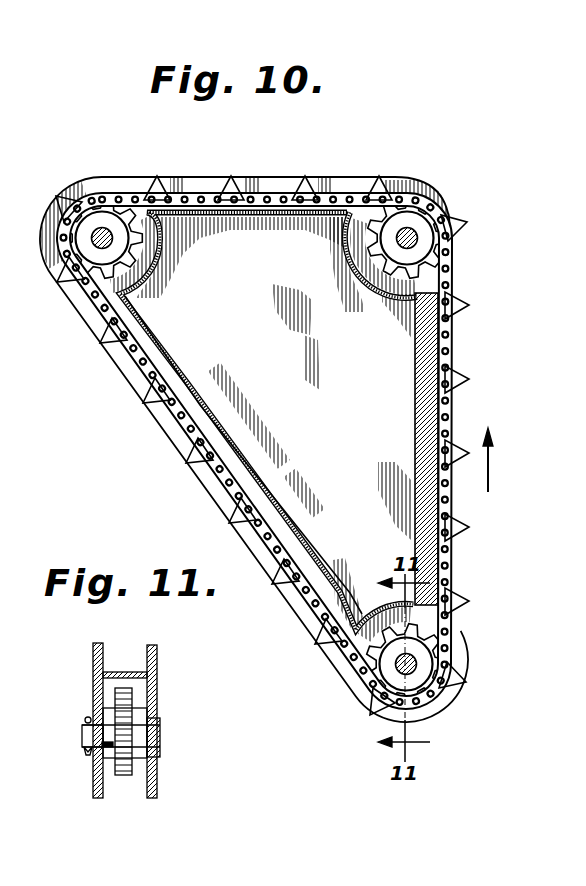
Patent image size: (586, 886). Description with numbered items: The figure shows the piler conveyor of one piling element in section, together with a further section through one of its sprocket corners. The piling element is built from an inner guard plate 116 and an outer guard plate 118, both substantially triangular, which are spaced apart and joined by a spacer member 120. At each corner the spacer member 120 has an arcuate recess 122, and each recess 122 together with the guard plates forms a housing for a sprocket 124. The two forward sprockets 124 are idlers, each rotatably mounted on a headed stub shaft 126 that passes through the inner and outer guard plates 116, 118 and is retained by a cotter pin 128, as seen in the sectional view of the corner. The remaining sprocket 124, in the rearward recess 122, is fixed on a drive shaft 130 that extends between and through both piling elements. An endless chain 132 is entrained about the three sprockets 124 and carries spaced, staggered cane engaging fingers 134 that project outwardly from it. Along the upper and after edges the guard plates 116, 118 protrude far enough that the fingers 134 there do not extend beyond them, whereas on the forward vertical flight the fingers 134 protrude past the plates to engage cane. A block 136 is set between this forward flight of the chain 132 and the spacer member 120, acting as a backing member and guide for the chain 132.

In FIG. 10, the inner guard plate 116 is at (43, 300).
In FIG. 11, the inner guard plate 116 is at (94, 663).
In FIG. 10, the outer guard plate 118 is at (272, 383).
In FIG. 11, the outer guard plate 118 is at (158, 668).
In FIG. 10, the spacer member 120 is at (253, 486).
In FIG. 10, the arcuate recess 122 is at (140, 203).
In FIG. 11, the arcuate recess 122 is at (133, 697).
In FIG. 10, the sprocket 124 is at (451, 280).
In FIG. 11, the sprocket 124 is at (127, 730).
In FIG. 10, the headed stub shaft 126 is at (415, 235).
In FIG. 11, the headed stub shaft 126 is at (85, 738).
In FIG. 11, the cotter pin 128 is at (87, 752).
In FIG. 10, the drive shaft 130 is at (95, 245).
In FIG. 10, the endless chain 132 is at (268, 198).
In FIG. 10, the cane engaging finger 134 is at (467, 372).
In FIG. 10, the block 136 is at (432, 420).